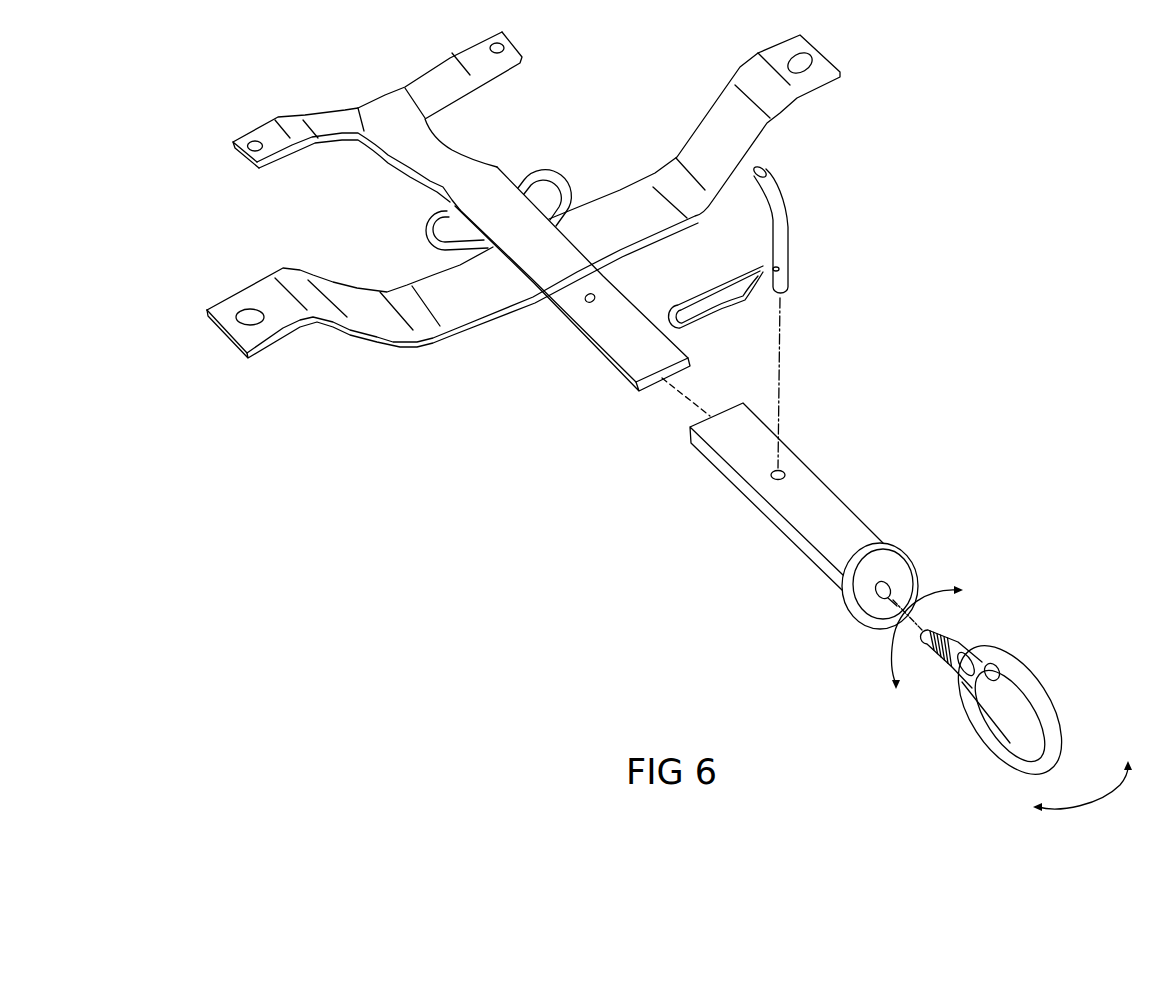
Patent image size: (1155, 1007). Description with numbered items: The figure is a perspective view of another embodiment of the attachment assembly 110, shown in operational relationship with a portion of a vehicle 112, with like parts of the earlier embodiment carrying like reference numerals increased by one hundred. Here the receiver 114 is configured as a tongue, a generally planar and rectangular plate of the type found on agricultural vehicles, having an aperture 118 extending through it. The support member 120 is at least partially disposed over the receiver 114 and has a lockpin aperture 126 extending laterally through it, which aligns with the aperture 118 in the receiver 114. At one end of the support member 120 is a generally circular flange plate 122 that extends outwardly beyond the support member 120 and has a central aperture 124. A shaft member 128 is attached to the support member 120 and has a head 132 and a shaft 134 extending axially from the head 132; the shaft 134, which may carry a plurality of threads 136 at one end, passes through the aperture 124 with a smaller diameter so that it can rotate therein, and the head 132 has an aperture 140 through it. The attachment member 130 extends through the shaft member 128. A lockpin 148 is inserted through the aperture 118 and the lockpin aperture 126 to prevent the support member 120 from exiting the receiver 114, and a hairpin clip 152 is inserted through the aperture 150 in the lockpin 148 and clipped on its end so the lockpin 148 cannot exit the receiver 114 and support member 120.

The attachment assembly 110 is at (1000, 518).
The mounting bracket 112 is at (504, 163).
The receiver 114 is at (637, 352).
The aperture 118 is at (585, 298).
The support member 120 is at (850, 523).
The flange plate 122 is at (903, 572).
The central aperture 124 is at (880, 603).
The lockpin aperture 126 is at (786, 472).
The shaft member 128 is at (972, 646).
The attachment member 130 is at (1050, 712).
The head 132 is at (968, 688).
The shaft 134 is at (940, 650).
The threads 136 is at (940, 632).
The aperture 140 is at (1000, 666).
The lockpin 148 is at (779, 236).
The aperture 150 is at (774, 268).
The hairpin clip 152 is at (692, 320).